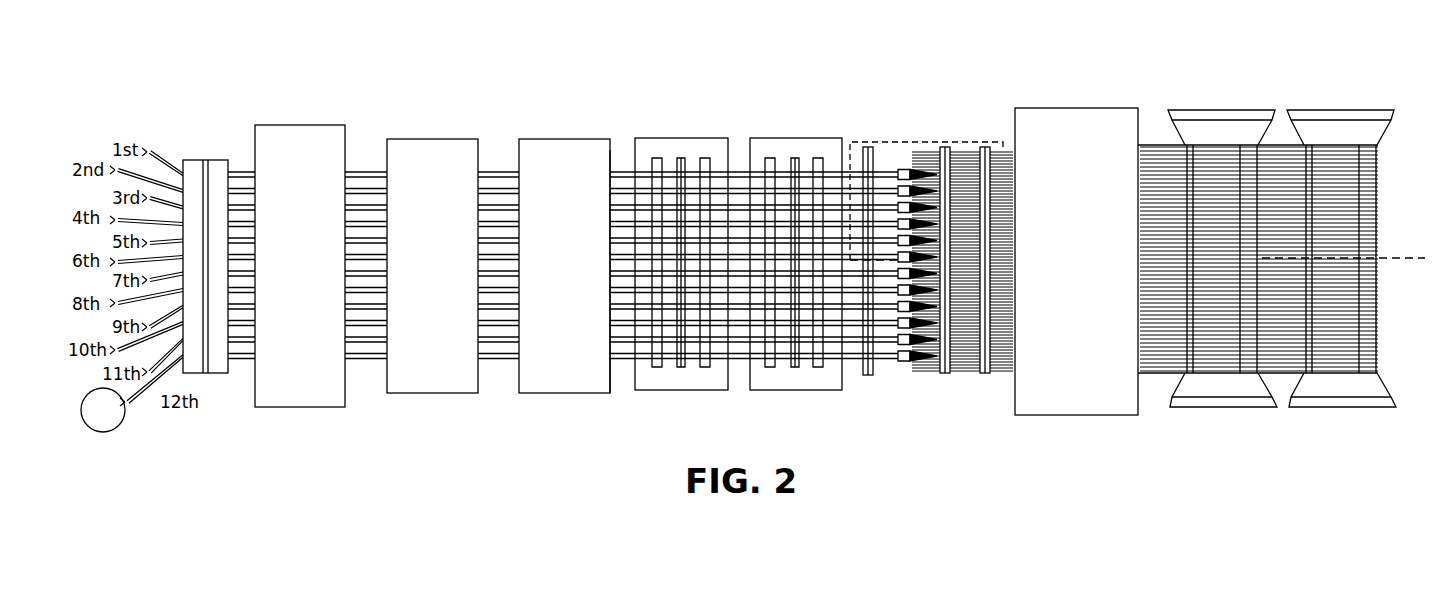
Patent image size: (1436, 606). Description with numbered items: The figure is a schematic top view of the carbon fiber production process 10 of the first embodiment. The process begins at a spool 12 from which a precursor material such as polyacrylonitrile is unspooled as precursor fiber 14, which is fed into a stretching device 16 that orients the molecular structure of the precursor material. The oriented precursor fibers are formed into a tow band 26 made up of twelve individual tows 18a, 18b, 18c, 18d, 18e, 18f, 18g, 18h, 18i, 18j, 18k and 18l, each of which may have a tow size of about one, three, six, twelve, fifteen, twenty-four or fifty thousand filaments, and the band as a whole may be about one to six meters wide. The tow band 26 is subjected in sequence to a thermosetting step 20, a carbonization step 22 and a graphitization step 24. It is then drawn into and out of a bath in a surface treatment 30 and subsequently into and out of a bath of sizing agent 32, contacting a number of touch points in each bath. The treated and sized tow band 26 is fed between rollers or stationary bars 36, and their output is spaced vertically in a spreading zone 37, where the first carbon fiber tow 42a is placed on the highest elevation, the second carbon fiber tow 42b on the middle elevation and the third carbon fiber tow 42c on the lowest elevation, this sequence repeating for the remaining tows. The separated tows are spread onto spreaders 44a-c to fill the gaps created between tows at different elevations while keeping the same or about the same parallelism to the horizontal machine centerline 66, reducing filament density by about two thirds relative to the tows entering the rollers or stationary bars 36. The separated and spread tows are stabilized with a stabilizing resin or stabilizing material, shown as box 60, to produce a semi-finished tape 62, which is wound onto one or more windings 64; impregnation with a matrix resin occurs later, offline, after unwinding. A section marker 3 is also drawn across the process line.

The carbon fiber production process 10 is at (190, 63).
The spool 12 is at (108, 433).
The precursor fiber 14 is at (133, 408).
The stretching device 16 is at (228, 135).
The tow 18a is at (243, 174).
The tow 18b is at (247, 191).
The tow 18c is at (245, 207).
The tow 18d is at (247, 224).
The tow 18e is at (245, 240).
The tow 18f is at (247, 257).
The tow 18g is at (245, 273).
The tow 18h is at (247, 290).
The tow 18i is at (245, 306).
The tow 18j is at (247, 323).
The tow 18k is at (245, 339).
The tow 18l is at (247, 356).
The thermosetting step 20 is at (300, 125).
The carbonization step 22 is at (437, 139).
The graphitization step 24 is at (563, 139).
The tow band 26 is at (621, 170).
The surface treatment 30 is at (683, 138).
The sizing agent 32 is at (797, 138).
The rollers or stationary bars 36 is at (868, 377).
The spreading zone 37 is at (953, 236).
The first carbon fiber tow 42a is at (896, 185).
The second carbon fiber tow 42b is at (904, 203).
The third carbon fiber tow 42c is at (903, 222).
The spreaders 44a-c is at (948, 375).
The stabilizing step 60 is at (1078, 108).
The semi-finished tape 62 is at (1162, 145).
The windings 64 is at (1340, 110).
The horizontal machine centerline 66 is at (1388, 260).
The detail area of FIG. 3 is at (950, 142).